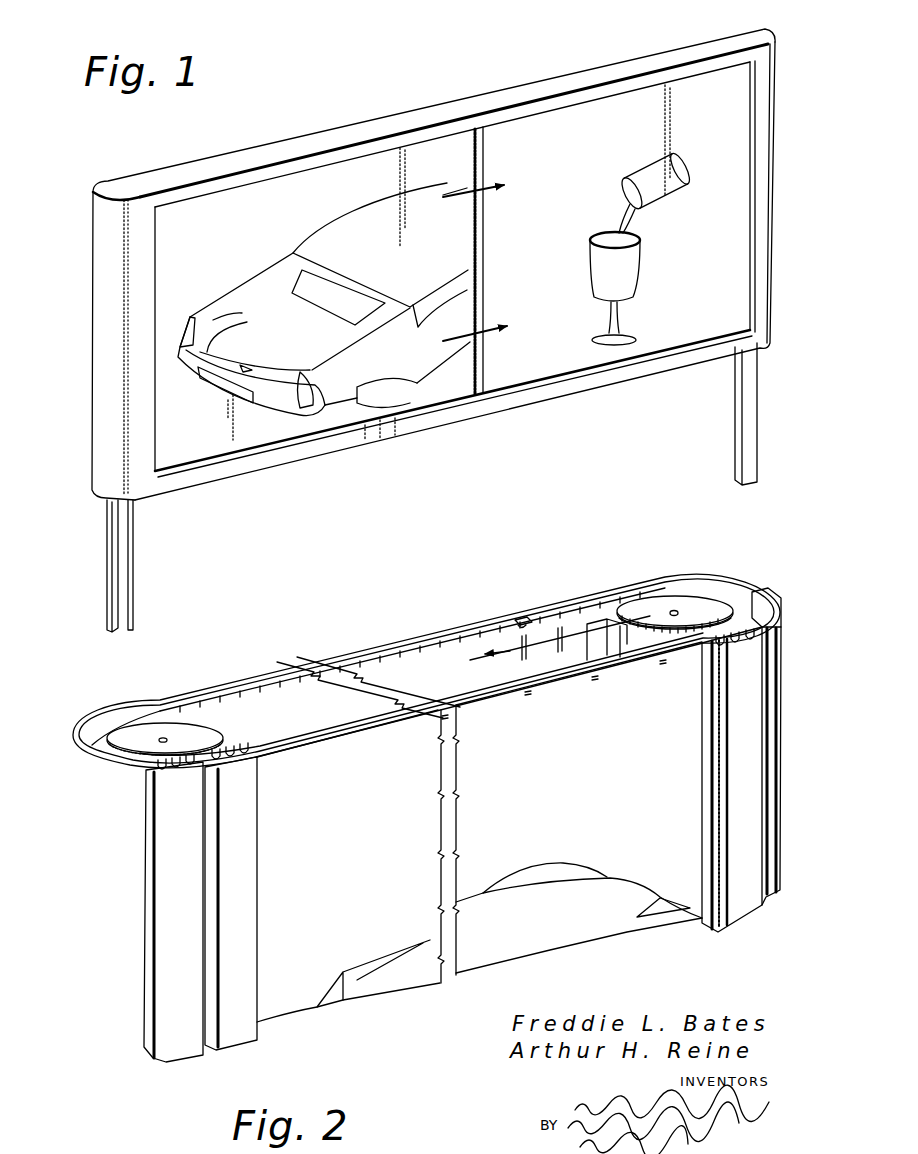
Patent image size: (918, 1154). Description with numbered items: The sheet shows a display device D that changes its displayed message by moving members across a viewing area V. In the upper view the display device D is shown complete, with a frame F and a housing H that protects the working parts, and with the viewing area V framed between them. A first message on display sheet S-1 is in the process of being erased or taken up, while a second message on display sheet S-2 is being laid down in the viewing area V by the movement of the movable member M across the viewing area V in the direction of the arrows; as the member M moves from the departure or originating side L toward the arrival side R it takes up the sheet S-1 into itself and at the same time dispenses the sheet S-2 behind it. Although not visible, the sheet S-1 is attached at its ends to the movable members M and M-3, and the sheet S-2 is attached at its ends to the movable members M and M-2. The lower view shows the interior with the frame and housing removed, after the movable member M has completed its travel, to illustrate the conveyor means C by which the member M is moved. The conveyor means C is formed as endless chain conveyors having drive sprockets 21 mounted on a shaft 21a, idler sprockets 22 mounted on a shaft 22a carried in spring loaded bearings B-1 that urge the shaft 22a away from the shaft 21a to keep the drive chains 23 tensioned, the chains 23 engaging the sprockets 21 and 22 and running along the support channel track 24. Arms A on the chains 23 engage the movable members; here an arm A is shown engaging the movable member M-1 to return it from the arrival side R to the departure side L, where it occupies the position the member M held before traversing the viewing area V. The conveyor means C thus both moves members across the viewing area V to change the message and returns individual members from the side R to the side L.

In FIG. 1, the display device D is at (96, 176).
In FIG. 1, the housing H is at (642, 70).
In FIG. 1, the movable member M is at (490, 143).
In FIG. 2, the movable member M is at (750, 728).
In FIG. 1, the arrival side R is at (740, 268).
In FIG. 1, the departure side L is at (160, 369).
In FIG. 1, the viewing area V is at (173, 420).
In FIG. 1, the frame F is at (193, 487).
In FIG. 2, the frame F is at (597, 625).
In FIG. 1, the display sheet S-1 is at (722, 121).
In FIG. 1, the display sheet S-2 is at (218, 232).
In FIG. 2, the display sheet S-2 is at (336, 810).
In FIG. 2, the conveyor means C is at (78, 713).
In FIG. 2, the drive sprockets 21 is at (134, 735).
In FIG. 2, the shaft 21a is at (165, 735).
In FIG. 2, the idler sprockets 22 is at (663, 605).
In FIG. 2, the shaft 22a is at (681, 613).
In FIG. 2, the drive chains 23 is at (403, 655).
In FIG. 2, the support channel track 24 is at (92, 750).
In FIG. 2, the arm A is at (527, 617).
In FIG. 2, the spring loaded bearings B-1 is at (640, 618).
In FIG. 2, the movable member M-1 is at (560, 640).
In FIG. 2, the movable member M-2 is at (227, 942).
In FIG. 2, the movable member M-3 is at (781, 678).